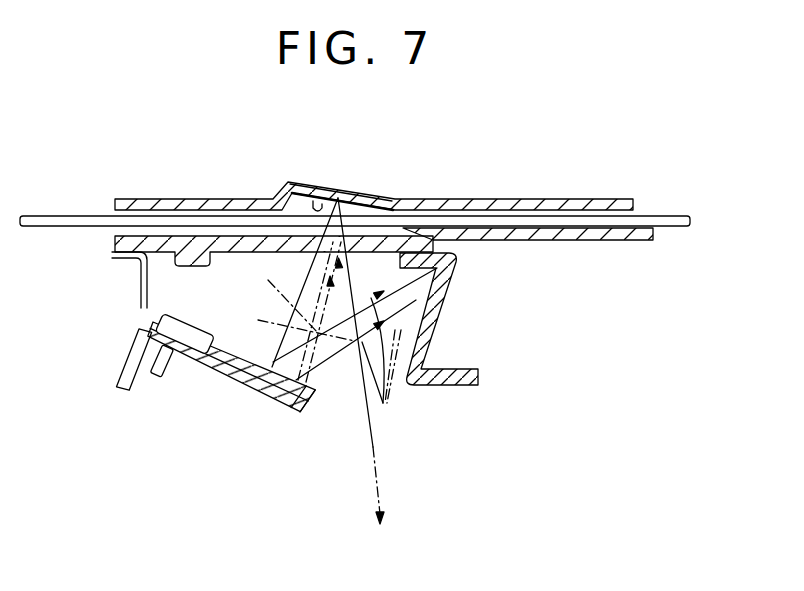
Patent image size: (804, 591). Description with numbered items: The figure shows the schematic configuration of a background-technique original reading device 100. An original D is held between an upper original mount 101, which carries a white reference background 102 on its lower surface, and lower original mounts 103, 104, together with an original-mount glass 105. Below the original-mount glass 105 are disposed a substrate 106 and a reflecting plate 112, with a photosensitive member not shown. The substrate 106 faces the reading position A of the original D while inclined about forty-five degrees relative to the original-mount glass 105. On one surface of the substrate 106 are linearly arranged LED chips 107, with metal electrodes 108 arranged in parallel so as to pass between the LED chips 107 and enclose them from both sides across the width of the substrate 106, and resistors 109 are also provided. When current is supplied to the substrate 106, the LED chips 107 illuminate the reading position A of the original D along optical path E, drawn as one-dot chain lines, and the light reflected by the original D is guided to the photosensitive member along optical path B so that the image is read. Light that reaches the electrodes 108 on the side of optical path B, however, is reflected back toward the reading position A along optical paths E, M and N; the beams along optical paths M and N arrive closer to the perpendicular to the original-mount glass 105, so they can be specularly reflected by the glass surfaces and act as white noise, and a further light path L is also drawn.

The original reading device 100 is at (350, 219).
The upper original mount 101 is at (515, 201).
The white reference background 102 is at (333, 197).
The lower original mount 103 is at (602, 244).
The lower original mount 104 is at (121, 257).
The original-mount glass 105 is at (232, 246).
The substrate 106 is at (309, 398).
The LED chip 107 is at (215, 414).
The electrode 108 is at (235, 383).
The resistor 109 is at (200, 338).
The reflecting plate 112 is at (476, 368).
The reading position A is at (352, 205).
The optical path B is at (377, 483).
The original D is at (657, 214).
The optical path E is at (280, 296).
The converging light path L is at (355, 354).
The optical path M is at (322, 335).
The optical path N is at (293, 321).